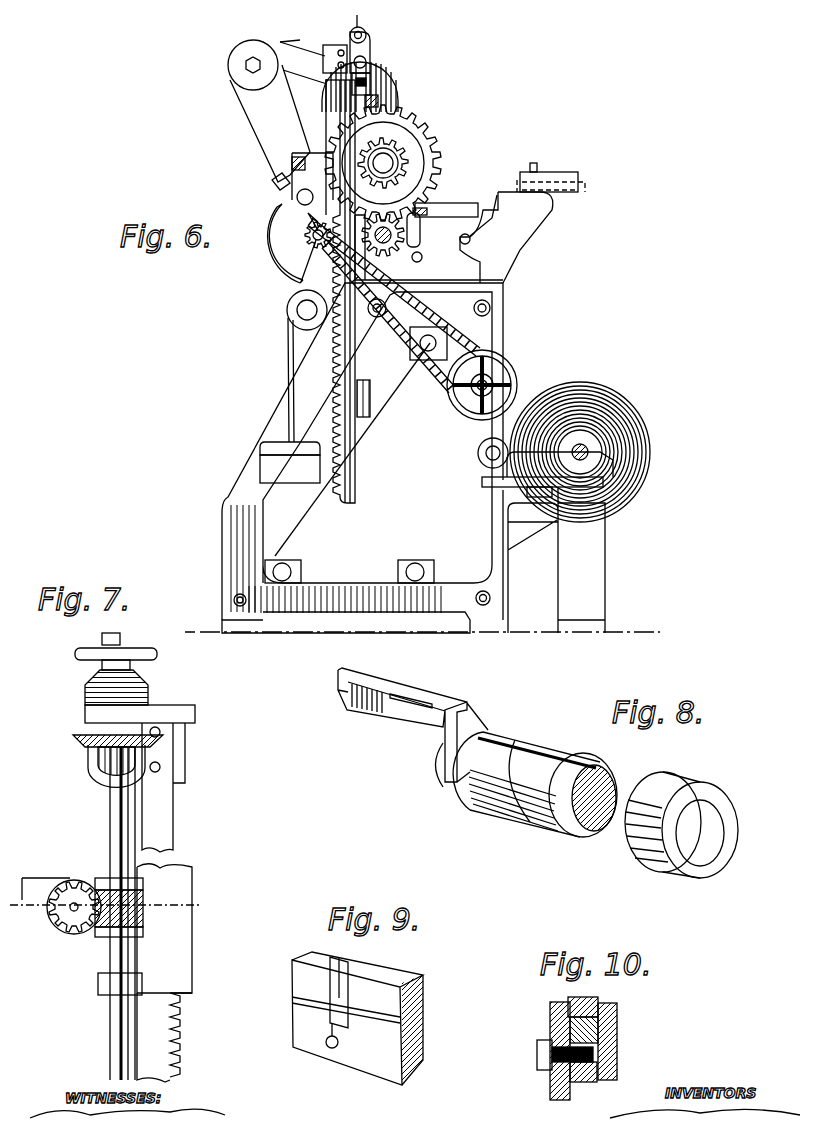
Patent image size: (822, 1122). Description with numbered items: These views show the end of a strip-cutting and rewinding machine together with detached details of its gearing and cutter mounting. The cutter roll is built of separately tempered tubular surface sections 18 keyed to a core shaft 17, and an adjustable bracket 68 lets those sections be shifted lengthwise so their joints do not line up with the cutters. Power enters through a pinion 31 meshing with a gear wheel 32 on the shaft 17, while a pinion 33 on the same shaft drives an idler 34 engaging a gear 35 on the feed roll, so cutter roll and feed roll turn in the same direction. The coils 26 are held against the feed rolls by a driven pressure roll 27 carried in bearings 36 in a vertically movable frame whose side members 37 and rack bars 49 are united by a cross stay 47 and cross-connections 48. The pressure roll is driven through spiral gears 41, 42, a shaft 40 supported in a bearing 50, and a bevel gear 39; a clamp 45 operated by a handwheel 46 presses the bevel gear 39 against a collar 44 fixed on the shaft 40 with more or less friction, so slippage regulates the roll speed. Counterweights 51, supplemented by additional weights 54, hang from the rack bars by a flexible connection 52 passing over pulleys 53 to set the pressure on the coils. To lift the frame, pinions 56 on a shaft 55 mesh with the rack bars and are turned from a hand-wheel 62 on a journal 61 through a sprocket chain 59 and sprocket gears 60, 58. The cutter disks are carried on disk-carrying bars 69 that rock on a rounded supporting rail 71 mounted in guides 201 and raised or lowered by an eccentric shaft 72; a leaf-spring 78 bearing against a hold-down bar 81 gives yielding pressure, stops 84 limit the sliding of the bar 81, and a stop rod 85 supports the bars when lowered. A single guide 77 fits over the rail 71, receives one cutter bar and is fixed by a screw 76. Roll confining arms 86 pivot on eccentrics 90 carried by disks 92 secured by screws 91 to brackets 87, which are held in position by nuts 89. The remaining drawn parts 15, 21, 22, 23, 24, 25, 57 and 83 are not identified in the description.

In FIG. 6, the frame 15 is at (228, 480).
In FIG. 7, the frame 15 is at (70, 905).
In FIG. 6, the core shaft 17 is at (392, 160).
In FIG. 7, the core shaft 17 is at (74, 912).
In FIG. 8, the core shaft 17 is at (597, 830).
In FIG. 8, the tubular surface sections 18 is at (515, 812).
In FIG. 6, the paper roll 21 is at (648, 452).
In FIG. 6, the bolt 22 is at (418, 562).
In FIG. 6, the bolt 23 is at (300, 565).
In FIG. 6, the rod 24 is at (437, 360).
In FIG. 6, the stud 25 is at (297, 197).
In FIG. 6, the coils 26 is at (390, 82).
In FIG. 6, the pressure roll 27 is at (370, 62).
In FIG. 6, the pinion 31 is at (395, 250).
In FIG. 6, the gear wheel 32 is at (430, 168).
In FIG. 6, the pinion 33 is at (400, 150).
In FIG. 6, the idler 34 is at (380, 186).
In FIG. 6, the gear 35 is at (308, 152).
In FIG. 6, the bearings 36 is at (368, 45).
In FIG. 6, the side members 37 is at (380, 101).
In FIG. 7, the bevel gear 39 is at (75, 740).
In FIG. 7, the shaft 40 is at (110, 818).
In FIG. 7, the spiral gear 41 is at (52, 915).
In FIG. 7, the spiral gear 42 is at (145, 903).
In FIG. 7, the collar 44 is at (100, 760).
In FIG. 7, the clamp 45 is at (86, 690).
In FIG. 7, the handwheel 46 is at (75, 654).
In FIG. 6, the cross stay 47 is at (357, 28).
In FIG. 6, the cross-connections 48 is at (328, 46).
In FIG. 6, the rack bars 49 is at (330, 102).
In FIG. 7, the rack bars 49 is at (180, 1040).
In FIG. 7, the bearing 50 is at (90, 715).
In FIG. 6, the counterweights 51 is at (305, 480).
In FIG. 6, the flexible connection 52 is at (287, 375).
In FIG. 6, the pulleys 53 is at (287, 306).
In FIG. 6, the additional weights 54 is at (262, 448).
In FIG. 6, the shaft 55 is at (310, 242).
In FIG. 6, the pinions 56 is at (306, 230).
In FIG. 6, the sector 57 is at (278, 210).
In FIG. 6, the sprocket gear 58 is at (300, 262).
In FIG. 6, the sprocket chain 59 is at (425, 310).
In FIG. 6, the sprocket gear 60 is at (500, 352).
In FIG. 6, the journal 61 is at (490, 378).
In FIG. 6, the hand-wheel 62 is at (505, 382).
In FIG. 8, the adjustable bracket 68 is at (452, 697).
In FIG. 6, the disk-carrying bars 69 is at (478, 205).
In FIG. 6, the supporting rail 71 is at (420, 228).
In FIG. 9, the supporting rail 71 is at (378, 1060).
In FIG. 6, the eccentric shaft 72 is at (479, 237).
In FIG. 9, the screw 76 is at (328, 1046).
In FIG. 9, the single guide 77 is at (350, 965).
In FIG. 6, the leaf-spring 78 is at (490, 190).
In FIG. 6, the hold-down bar 81 is at (580, 185).
In FIG. 6, the block 83 is at (548, 172).
In FIG. 6, the stops 84 is at (530, 165).
In FIG. 6, the stop rod 85 is at (510, 255).
In FIG. 6, the roll confining arms 86 is at (278, 42).
In FIG. 10, the roll confining arms 86 is at (590, 1082).
In FIG. 6, the brackets 87 is at (258, 100).
In FIG. 10, the brackets 87 is at (550, 1095).
In FIG. 6, the nuts 89 is at (272, 180).
In FIG. 10, the eccentrics 90 is at (575, 1026).
In FIG. 10, the screws 91 is at (540, 1058).
In FIG. 10, the disks 92 is at (618, 1040).
In FIG. 6, the guides 201 is at (438, 253).